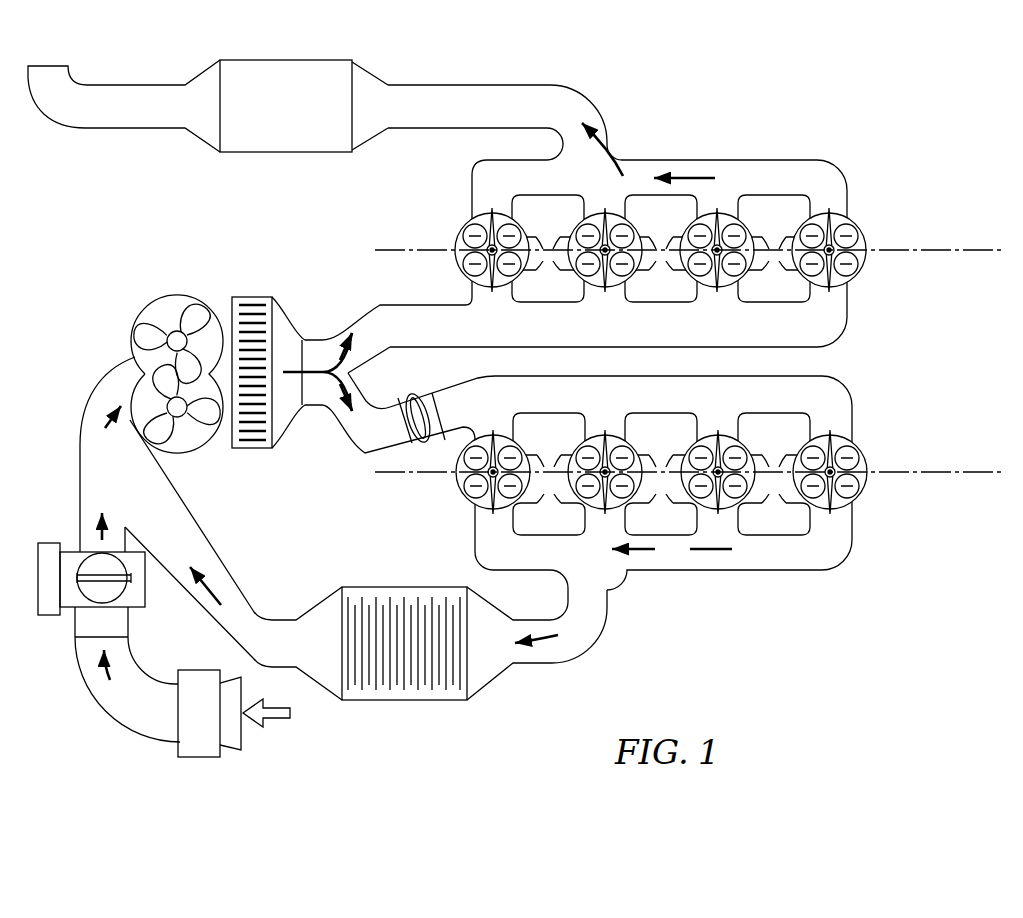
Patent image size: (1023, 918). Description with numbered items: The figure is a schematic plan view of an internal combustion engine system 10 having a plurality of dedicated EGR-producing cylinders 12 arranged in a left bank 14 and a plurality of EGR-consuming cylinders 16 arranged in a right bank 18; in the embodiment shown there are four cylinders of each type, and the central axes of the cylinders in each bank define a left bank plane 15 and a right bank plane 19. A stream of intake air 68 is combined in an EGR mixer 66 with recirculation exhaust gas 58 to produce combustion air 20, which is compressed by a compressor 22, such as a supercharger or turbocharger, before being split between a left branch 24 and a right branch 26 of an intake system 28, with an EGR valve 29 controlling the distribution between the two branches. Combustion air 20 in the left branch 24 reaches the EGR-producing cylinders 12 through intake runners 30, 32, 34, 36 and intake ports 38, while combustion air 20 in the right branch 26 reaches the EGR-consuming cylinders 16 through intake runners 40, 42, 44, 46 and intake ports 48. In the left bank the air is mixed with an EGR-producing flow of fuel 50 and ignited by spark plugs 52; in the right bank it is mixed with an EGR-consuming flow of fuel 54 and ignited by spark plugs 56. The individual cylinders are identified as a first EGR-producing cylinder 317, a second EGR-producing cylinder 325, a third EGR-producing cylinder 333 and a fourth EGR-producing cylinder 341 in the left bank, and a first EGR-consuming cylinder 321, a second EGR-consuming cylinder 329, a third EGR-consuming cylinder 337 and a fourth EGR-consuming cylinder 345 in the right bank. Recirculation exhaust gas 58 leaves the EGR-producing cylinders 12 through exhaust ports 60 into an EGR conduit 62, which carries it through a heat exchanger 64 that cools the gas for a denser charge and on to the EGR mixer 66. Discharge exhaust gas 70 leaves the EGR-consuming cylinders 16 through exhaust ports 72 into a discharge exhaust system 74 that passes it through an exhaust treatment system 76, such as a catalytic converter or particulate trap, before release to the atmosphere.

The internal combustion engine system 10 is at (869, 117).
The EGR-producing cylinders 12 is at (875, 457).
The left bank 14 is at (875, 488).
The left bank plane 15 is at (950, 466).
The EGR-consuming cylinders 16 is at (870, 233).
The right bank 18 is at (870, 267).
The right bank plane 19 is at (972, 241).
The combustion air 20 is at (102, 475).
The compressor 22 is at (177, 294).
The left branch 24 is at (367, 443).
The right branch 26 is at (375, 336).
The intake system 28 is at (374, 296).
The EGR valve 29 is at (426, 397).
The intake runner 30 is at (482, 428).
The intake runner 32 is at (594, 428).
The intake runner 34 is at (707, 428).
The intake runner 36 is at (819, 428).
The intake ports 38 is at (661, 434).
The intake runner 40 is at (481, 316).
The intake runner 42 is at (594, 316).
The intake runner 44 is at (706, 316).
The intake runner 46 is at (818, 316).
The intake ports 48 is at (661, 301).
The EGR-producing flow of fuel 50 is at (660, 479).
The spark plugs 52 is at (522, 458).
The EGR-consuming flow of fuel 54 is at (660, 257).
The spark plugs 56 is at (518, 240).
The recirculation exhaust gas 58 is at (661, 561).
The exhaust ports 60 is at (661, 519).
The EGR conduit 62 is at (596, 588).
The heat exchanger 64 is at (418, 675).
The EGR mixer 66 is at (103, 487).
The intake air 68 is at (153, 716).
The discharge exhaust gas 70 is at (622, 191).
The exhaust ports 72 is at (661, 216).
The discharge exhaust system 74 is at (631, 150).
The exhaust treatment system 76 is at (274, 116).
The first EGR-producing cylinder 317 is at (460, 485).
The first EGR-consuming cylinder 321 is at (490, 213).
The second EGR-producing cylinder 325 is at (608, 512).
The second EGR-consuming cylinder 329 is at (603, 213).
The third EGR-producing cylinder 333 is at (718, 510).
The third EGR-consuming cylinder 337 is at (719, 213).
The fourth EGR-producing cylinder 341 is at (843, 497).
The fourth EGR-consuming cylinder 345 is at (832, 213).